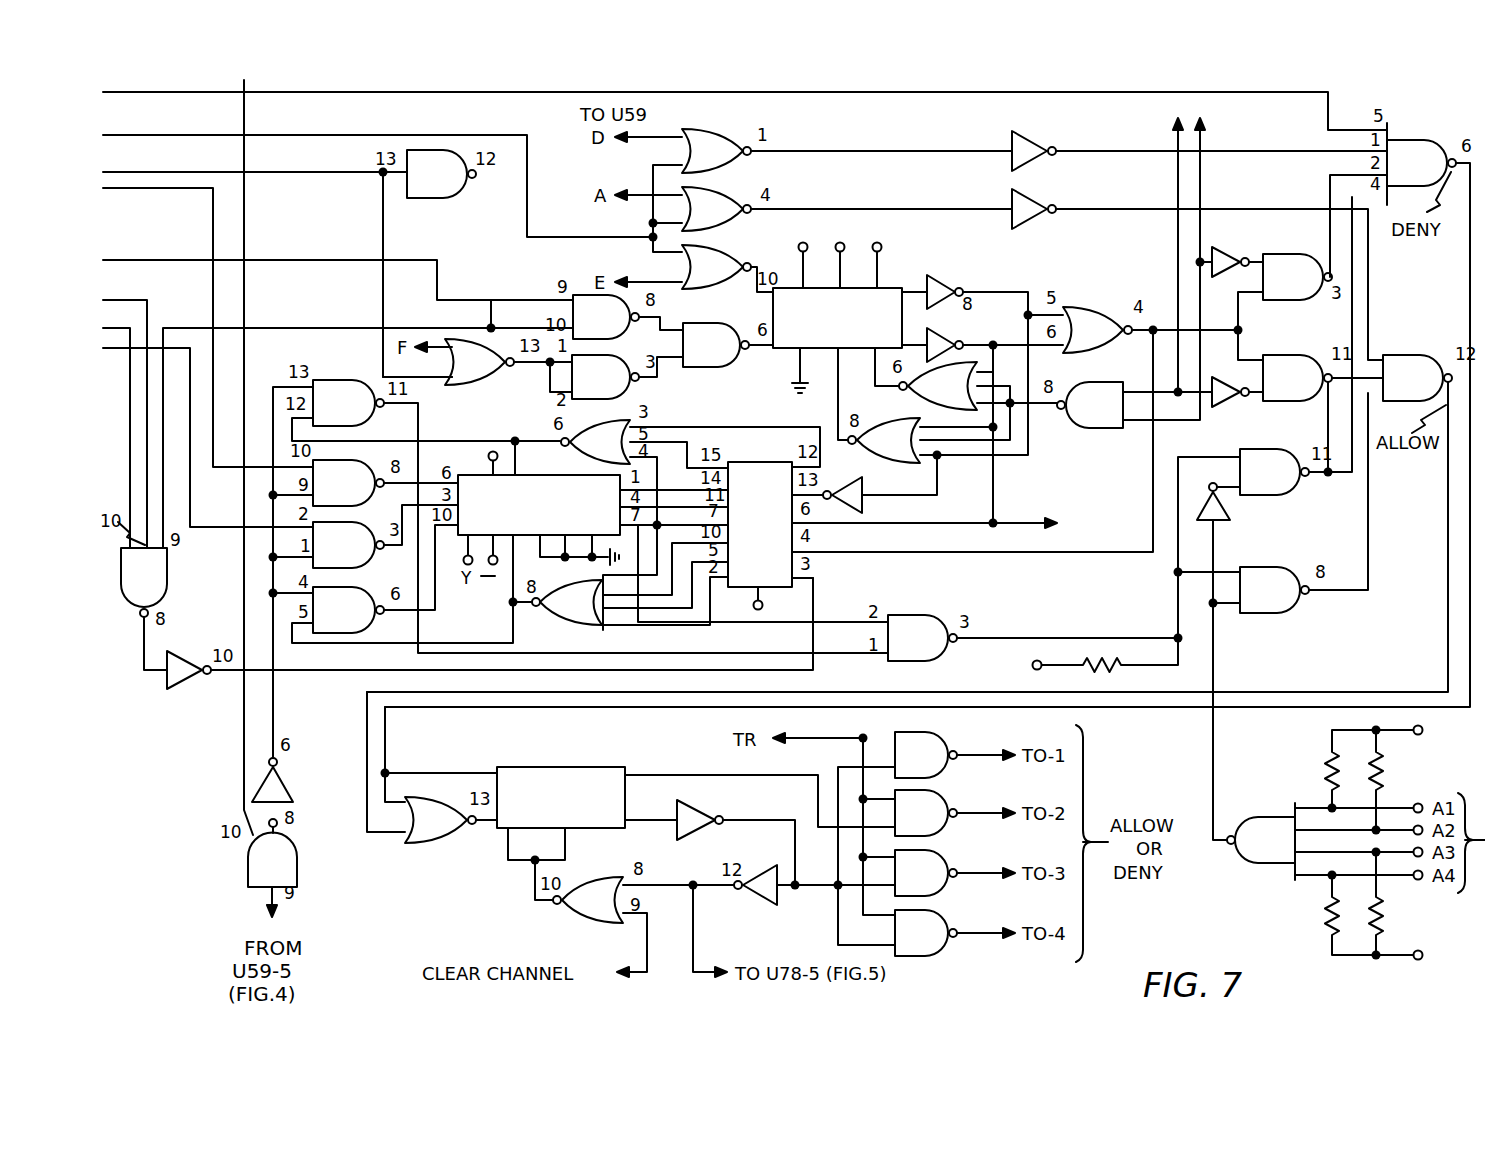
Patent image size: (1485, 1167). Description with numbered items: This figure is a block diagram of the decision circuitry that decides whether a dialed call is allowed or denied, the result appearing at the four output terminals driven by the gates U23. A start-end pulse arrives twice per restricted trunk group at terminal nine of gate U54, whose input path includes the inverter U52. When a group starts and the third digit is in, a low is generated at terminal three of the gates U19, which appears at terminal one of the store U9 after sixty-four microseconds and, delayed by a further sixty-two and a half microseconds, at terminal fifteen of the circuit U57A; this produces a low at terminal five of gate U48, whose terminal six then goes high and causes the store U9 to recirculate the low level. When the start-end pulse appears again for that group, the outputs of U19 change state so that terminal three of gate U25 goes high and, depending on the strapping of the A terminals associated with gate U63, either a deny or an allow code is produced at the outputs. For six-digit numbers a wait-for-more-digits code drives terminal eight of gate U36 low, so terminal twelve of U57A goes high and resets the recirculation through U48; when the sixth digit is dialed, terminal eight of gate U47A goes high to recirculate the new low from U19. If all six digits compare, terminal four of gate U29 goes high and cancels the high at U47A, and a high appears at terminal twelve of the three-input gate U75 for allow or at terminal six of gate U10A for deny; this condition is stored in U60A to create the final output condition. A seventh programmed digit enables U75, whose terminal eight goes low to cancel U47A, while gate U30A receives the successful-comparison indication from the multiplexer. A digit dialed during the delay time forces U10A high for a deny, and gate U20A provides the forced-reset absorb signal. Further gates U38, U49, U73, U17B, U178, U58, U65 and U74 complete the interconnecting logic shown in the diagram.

The three-input gate U75 is at (786, 383).
The NOR gate U38 is at (598, 257).
The NAND gate U49 is at (660, 347).
The storage circuit U60A is at (699, 558).
The gate U36 is at (700, 810).
The gate U29 is at (1097, 330).
The gate U30A is at (1194, 337).
The gate U10A is at (1234, 180).
The gate U20A is at (912, 412).
The inverter U73 is at (868, 497).
The delay circuit U57A is at (760, 524).
The store U9 is at (539, 505).
The gate U48 is at (595, 442).
The gate U47A is at (567, 602).
The gate U19 is at (348, 506).
The gate U25 is at (922, 638).
The NAND gate U17B is at (1253, 484).
The NAND gate U178 is at (1274, 590).
The inverter U52 is at (295, 795).
The gate U54 is at (272, 853).
The inverter U58 is at (169, 686).
The NOR gate U65 is at (514, 860).
The inverter U74 is at (763, 869).
The NAND gate U23 is at (926, 844).
The NAND gate U63 is at (1261, 840).